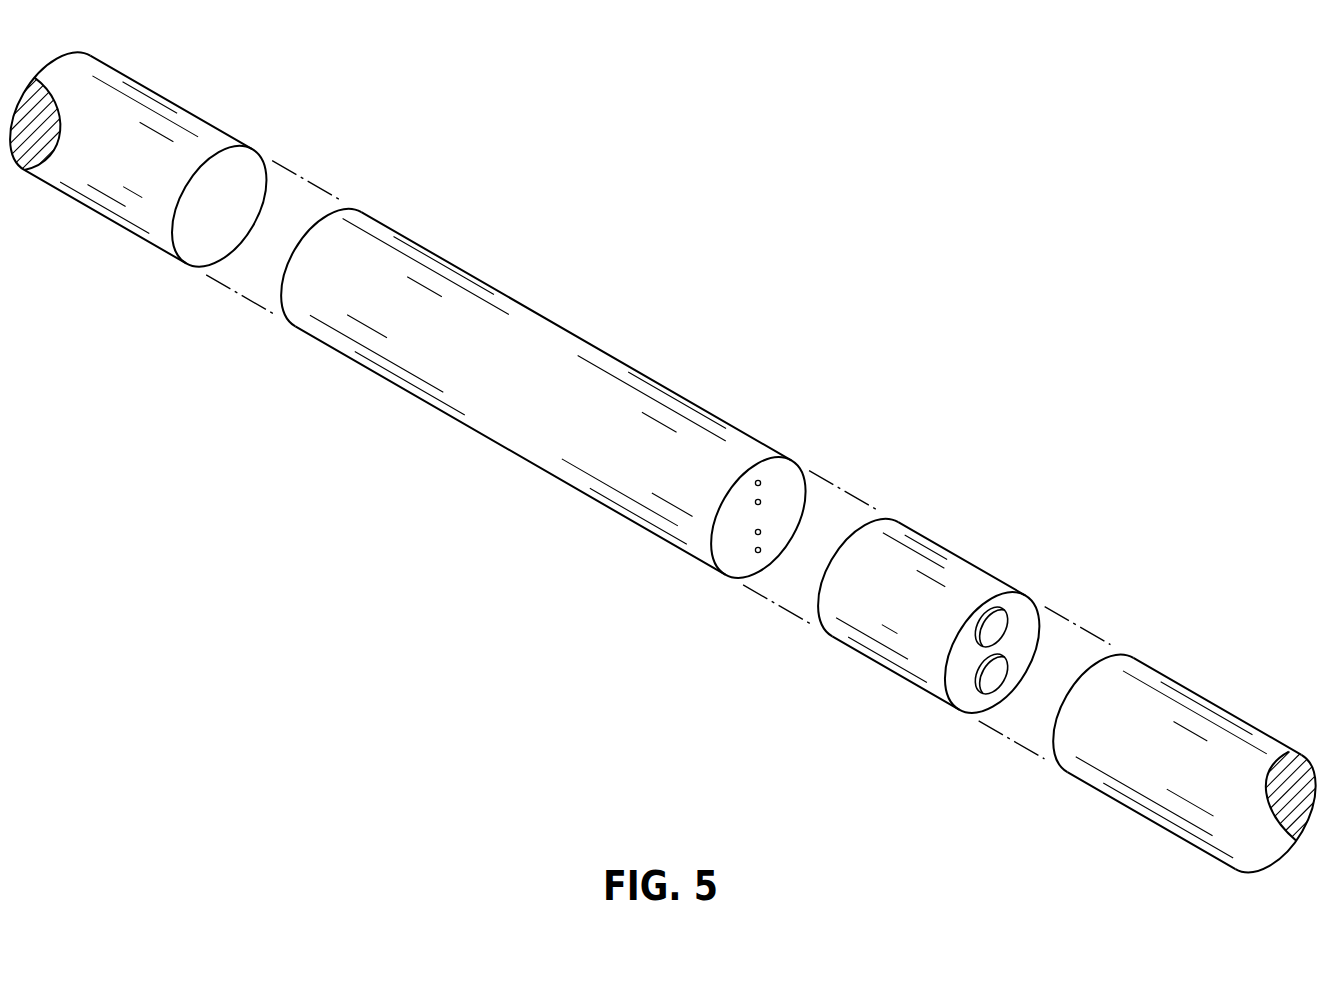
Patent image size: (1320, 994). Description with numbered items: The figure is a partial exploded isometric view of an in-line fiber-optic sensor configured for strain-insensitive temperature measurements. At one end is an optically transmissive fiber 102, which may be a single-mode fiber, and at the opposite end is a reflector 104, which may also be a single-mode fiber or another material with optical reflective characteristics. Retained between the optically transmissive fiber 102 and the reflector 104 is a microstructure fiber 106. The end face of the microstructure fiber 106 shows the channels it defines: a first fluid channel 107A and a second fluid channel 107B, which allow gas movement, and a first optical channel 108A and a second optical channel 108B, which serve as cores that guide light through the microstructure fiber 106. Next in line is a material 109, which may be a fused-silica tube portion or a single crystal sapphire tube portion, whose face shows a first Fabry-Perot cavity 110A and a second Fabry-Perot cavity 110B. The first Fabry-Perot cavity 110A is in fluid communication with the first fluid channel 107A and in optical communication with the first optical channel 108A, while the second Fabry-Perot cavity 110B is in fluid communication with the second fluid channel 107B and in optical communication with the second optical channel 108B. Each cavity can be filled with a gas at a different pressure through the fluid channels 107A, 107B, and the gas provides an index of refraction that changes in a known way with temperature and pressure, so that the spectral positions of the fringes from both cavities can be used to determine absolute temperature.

The optically transmissive fiber 102 is at (190, 113).
The reflector 104 is at (1217, 708).
The microstructure fiber 106 is at (618, 362).
The first fluid channel 107A is at (759, 481).
The second fluid channel 107B is at (758, 551).
The first optical channel 108A is at (759, 502).
The second optical channel 108B is at (757, 532).
The material 109 is at (962, 560).
The first Fabry-Perot cavity 110A is at (997, 625).
The second Fabry-Perot cavity 110B is at (993, 676).